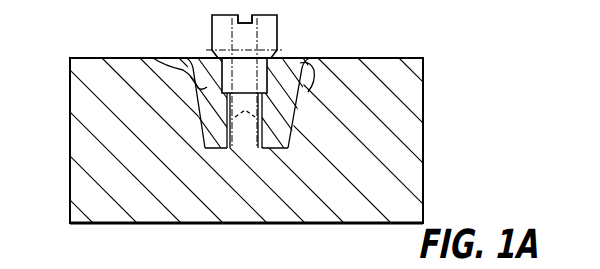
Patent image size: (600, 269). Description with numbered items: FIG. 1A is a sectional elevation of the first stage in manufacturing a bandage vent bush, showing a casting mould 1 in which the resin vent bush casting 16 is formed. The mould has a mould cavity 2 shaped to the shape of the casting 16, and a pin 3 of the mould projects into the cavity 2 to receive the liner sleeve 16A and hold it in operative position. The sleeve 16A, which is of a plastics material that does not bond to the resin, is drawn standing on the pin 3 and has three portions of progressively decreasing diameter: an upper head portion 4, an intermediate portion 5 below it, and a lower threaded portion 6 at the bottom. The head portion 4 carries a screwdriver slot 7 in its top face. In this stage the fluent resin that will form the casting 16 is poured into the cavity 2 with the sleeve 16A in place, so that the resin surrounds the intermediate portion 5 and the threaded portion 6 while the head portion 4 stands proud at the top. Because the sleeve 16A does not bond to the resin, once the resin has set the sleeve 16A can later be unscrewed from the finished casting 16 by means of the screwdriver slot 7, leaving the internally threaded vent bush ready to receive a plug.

The casting mould 1 is at (393, 157).
The mould cavity 2 is at (197, 113).
The pin 3 is at (242, 128).
The head portion 4 is at (212, 36).
The intermediate portion 5 is at (268, 83).
The lower threaded portion 6 is at (282, 141).
The screwdriver slot 7 is at (256, 19).
The casting 16 is at (157, 60).
The liner sleeve 16A is at (277, 40).